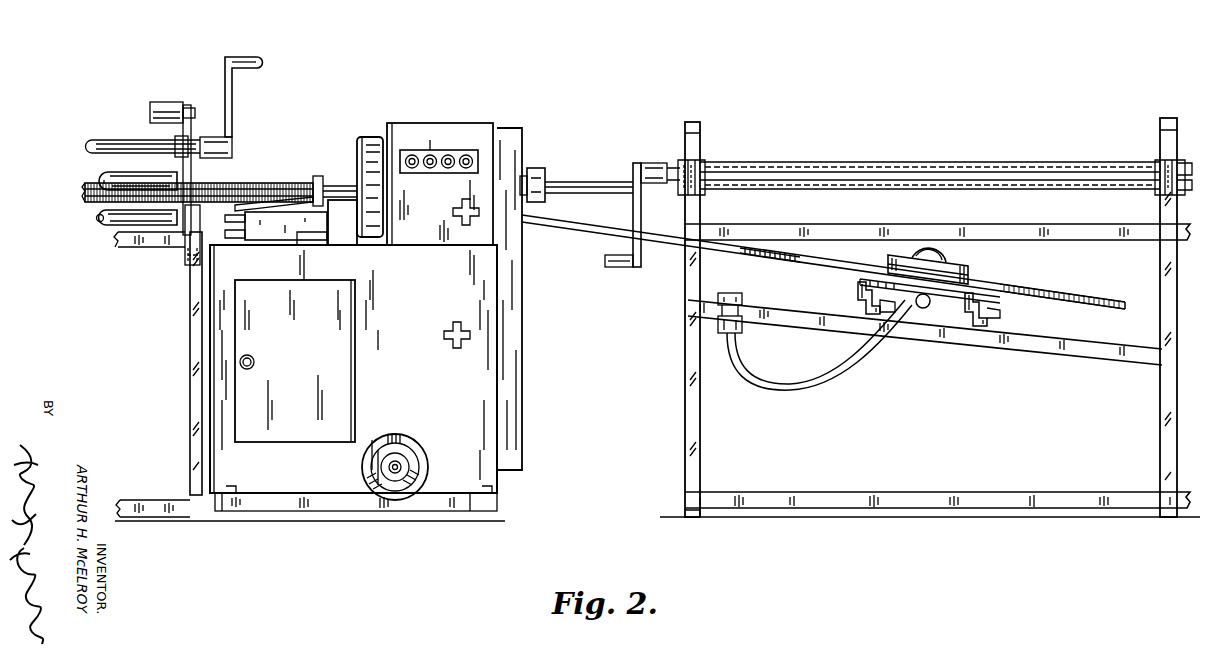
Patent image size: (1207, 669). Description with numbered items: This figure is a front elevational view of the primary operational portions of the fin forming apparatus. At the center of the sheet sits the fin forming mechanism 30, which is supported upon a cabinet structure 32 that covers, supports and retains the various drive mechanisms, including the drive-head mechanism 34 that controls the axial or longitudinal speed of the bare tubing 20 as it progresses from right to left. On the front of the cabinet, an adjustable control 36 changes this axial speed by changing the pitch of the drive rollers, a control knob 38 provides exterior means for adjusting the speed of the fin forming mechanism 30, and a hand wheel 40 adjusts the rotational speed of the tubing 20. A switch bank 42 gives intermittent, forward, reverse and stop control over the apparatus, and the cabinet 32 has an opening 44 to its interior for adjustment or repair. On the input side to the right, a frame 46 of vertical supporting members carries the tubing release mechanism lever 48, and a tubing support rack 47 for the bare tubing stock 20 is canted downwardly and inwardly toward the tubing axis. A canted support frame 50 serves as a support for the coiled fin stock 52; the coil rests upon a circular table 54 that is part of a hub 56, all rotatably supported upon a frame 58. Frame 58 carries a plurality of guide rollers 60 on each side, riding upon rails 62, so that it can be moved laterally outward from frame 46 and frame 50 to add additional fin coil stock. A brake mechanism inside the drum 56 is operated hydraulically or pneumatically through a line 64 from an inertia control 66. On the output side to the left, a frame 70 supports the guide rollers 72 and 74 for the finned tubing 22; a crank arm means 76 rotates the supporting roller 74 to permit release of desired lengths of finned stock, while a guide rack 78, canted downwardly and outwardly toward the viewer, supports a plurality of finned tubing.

The tubing 20 is at (560, 183).
The finned tubing 22 is at (252, 174).
The fin forming mechanism 30 is at (325, 170).
The cabinet structure 32 is at (292, 477).
The drive-head mechanism 34 is at (408, 122).
The adjustable control 36 is at (458, 214).
The control knob 38 is at (447, 337).
The hand wheel 40 is at (417, 447).
The switch bank 42 is at (438, 150).
The opening 44 is at (295, 361).
The frame 46 is at (690, 410).
The tubing support rack 47 is at (705, 126).
The tubing release mechanism lever 48 is at (617, 268).
The support frame 50 is at (1127, 360).
The coiled fin stock 52 is at (1045, 292).
The circular table 54 is at (1082, 305).
The hub 56 is at (965, 270).
The frame 58 is at (882, 285).
The guide rollers 60 is at (866, 297).
The rails 62 is at (860, 320).
The line 64 is at (795, 386).
The inertia control 66 is at (738, 300).
The frame 70 is at (198, 408).
The guide roller 72 is at (100, 216).
The guide roller 74 is at (110, 178).
The crank arm means 76 is at (257, 58).
The guide rack 78 is at (192, 211).